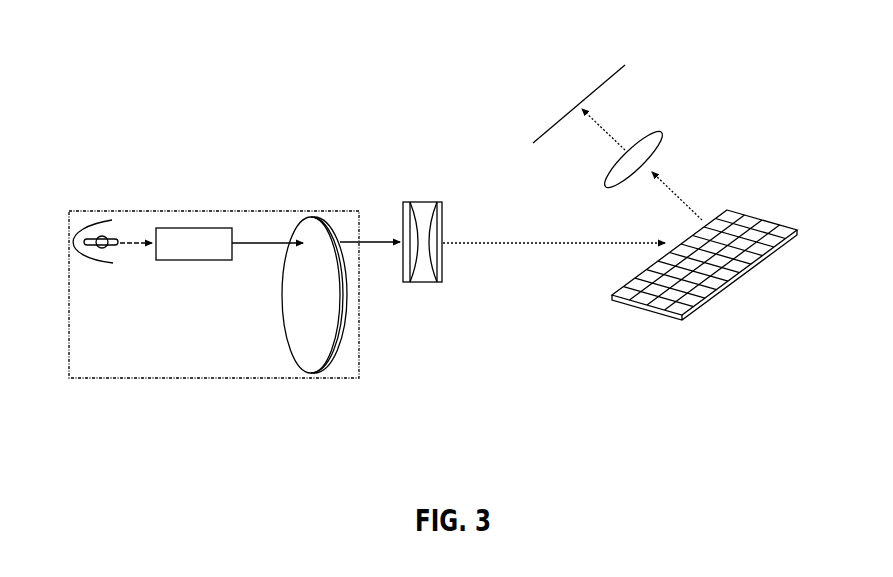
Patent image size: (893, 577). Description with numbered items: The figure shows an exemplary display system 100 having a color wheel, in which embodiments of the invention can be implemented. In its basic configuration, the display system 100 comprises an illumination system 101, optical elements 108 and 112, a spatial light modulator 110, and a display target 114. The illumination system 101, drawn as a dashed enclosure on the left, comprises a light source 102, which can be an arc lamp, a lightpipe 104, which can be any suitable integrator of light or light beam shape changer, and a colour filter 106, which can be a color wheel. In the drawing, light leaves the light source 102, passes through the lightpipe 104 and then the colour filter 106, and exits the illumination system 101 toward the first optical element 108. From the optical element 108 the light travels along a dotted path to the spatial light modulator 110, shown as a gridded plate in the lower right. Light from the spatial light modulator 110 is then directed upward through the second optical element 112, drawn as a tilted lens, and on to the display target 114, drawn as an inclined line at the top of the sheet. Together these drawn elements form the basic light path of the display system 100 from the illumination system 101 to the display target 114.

The display system 100 is at (320, 133).
The illumination system 101 is at (213, 379).
The light source 102 is at (95, 218).
The lightpipe 104 is at (193, 227).
The colour filter 106 is at (318, 213).
The optical element 108 is at (422, 202).
The spatial light modulator 110 is at (735, 205).
The optical element 112 is at (660, 131).
The display target 114 is at (613, 73).